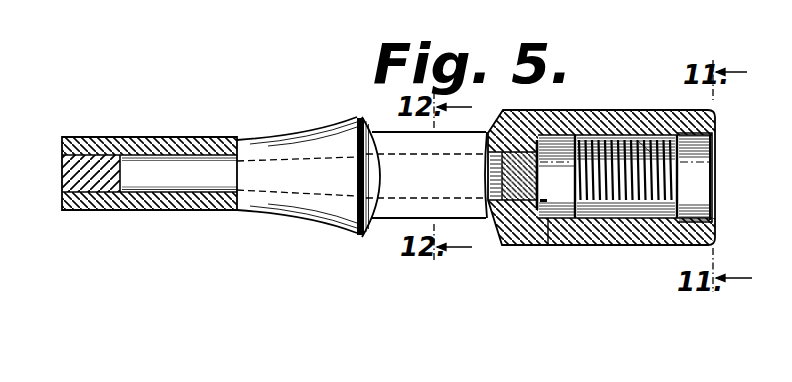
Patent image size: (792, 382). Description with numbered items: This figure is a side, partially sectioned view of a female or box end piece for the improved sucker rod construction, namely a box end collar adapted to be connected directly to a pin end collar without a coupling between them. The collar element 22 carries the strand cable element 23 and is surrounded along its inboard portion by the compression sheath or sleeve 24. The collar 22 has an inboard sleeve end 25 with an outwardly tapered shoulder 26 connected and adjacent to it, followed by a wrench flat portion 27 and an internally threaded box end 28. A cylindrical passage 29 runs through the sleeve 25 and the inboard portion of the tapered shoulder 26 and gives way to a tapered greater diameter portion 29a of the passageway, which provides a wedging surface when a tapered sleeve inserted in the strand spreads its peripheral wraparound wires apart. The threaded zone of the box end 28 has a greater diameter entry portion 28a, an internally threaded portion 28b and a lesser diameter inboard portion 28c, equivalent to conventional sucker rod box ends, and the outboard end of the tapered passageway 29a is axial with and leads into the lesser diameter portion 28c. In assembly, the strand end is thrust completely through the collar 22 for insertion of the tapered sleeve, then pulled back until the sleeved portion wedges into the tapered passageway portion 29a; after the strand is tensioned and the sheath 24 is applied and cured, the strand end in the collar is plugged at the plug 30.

The collar element 22 is at (544, 105).
The strand cable element 23 is at (88, 163).
The compression sheath or sleeve 24 is at (114, 210).
The inboard sleeve end 25 is at (170, 157).
The outwardly tapered shoulder 26 is at (353, 122).
The wrench flat portion 27 is at (455, 219).
The internally threaded box end 28 is at (578, 118).
The greater diameter entry portion 28a is at (678, 142).
The internally threaded portion 28b is at (637, 140).
The lesser diameter inboard portion 28c is at (548, 246).
The cylindrical passage 29 is at (267, 158).
The tapered greater diameter portion 29a is at (392, 199).
The plug 30 is at (525, 184).